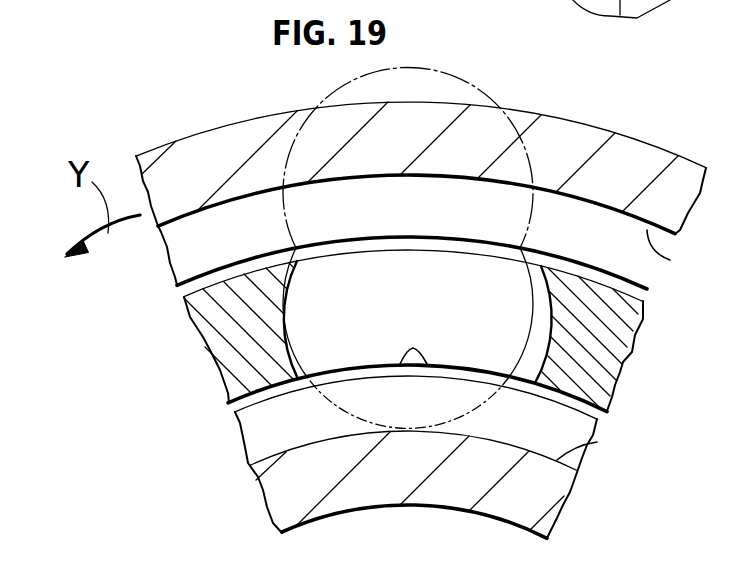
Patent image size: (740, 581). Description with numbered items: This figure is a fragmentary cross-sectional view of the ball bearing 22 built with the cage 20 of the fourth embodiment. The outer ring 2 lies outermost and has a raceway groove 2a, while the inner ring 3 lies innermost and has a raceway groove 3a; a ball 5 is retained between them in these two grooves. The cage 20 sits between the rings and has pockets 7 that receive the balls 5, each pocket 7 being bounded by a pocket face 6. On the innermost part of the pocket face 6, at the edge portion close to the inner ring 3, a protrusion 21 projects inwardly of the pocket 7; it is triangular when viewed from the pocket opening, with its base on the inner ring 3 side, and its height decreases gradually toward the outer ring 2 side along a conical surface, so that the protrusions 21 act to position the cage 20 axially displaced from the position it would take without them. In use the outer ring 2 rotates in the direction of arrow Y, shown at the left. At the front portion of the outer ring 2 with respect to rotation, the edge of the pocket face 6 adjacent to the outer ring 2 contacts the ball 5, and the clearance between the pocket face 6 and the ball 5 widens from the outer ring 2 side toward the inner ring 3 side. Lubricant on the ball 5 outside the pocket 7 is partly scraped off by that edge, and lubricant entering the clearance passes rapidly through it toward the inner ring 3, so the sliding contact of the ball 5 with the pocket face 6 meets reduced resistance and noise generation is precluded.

The outer ring 2 is at (680, 182).
The raceway groove 2a is at (680, 257).
The inner ring 3 is at (553, 482).
The raceway groove 3a is at (597, 442).
The ball 5 is at (517, 228).
The pocket face 6 is at (527, 383).
The pocket 7 is at (485, 353).
The cage 20 is at (623, 335).
The protrusion 21 is at (413, 357).
The ball bearing 22 is at (137, 141).